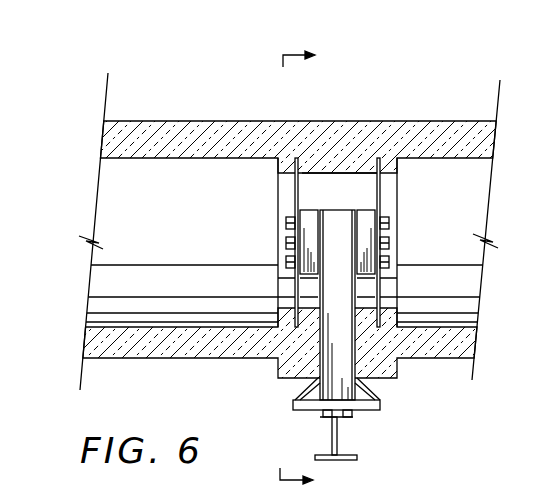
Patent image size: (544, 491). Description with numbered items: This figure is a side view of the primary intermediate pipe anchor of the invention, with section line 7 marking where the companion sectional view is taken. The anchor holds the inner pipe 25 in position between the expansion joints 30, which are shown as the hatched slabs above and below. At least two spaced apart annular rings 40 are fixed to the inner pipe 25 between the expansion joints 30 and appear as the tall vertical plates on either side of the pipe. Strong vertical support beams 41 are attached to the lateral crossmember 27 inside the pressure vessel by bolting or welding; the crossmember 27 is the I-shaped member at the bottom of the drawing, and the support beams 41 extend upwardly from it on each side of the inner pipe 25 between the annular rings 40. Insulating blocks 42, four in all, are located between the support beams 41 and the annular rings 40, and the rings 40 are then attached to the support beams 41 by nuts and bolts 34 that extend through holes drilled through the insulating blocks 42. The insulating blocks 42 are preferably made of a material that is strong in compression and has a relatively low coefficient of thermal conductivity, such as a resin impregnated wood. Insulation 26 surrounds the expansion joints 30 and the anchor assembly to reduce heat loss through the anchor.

The expansion joints 30 is at (190, 172).
The insulation 26 is at (183, 345).
The inner pipe 25 is at (342, 183).
The rings 40 is at (297, 157).
The support beams 41 is at (342, 355).
The insulating blocks 42 is at (308, 217).
The bolts 34 is at (286, 262).
The lateral crossmember 27 is at (337, 437).
The section line 7- 7 is at (307, 267).